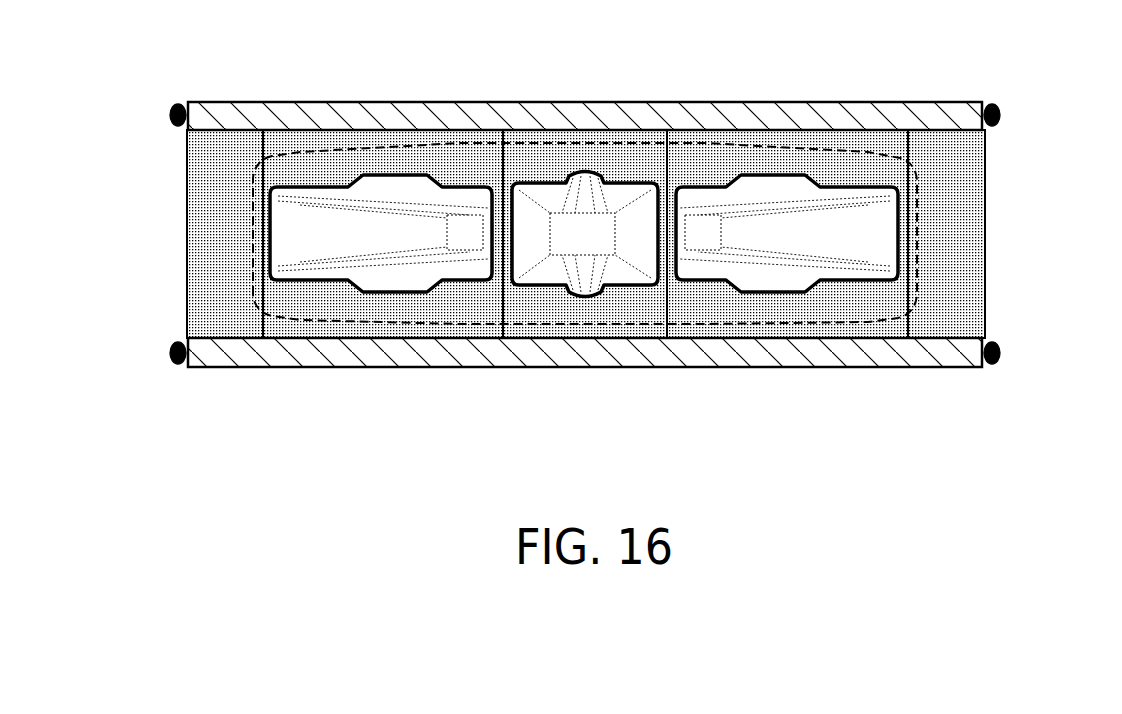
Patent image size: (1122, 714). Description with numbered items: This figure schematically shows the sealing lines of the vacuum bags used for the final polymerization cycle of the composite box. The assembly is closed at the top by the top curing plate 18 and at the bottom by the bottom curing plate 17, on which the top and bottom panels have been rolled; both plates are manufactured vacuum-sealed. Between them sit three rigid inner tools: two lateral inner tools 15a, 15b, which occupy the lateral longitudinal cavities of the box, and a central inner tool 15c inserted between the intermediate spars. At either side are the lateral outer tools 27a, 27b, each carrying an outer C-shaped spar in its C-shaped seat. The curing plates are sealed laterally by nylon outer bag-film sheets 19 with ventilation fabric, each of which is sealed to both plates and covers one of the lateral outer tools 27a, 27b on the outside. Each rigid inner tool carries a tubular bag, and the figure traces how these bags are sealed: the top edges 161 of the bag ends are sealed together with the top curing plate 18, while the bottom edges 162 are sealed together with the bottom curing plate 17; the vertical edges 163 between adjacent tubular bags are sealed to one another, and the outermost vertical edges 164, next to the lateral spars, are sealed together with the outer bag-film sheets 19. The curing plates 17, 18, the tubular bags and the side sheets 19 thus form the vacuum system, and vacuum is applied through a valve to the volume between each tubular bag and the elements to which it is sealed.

The lateral inner tool 15a is at (382, 294).
The lateral inner tool 15b is at (784, 292).
The central inner tool 15c is at (622, 292).
The bottom curing plate 17 is at (413, 367).
The top curing plate 18 is at (718, 120).
The outer bag-film sheet 19 is at (186, 178).
The lateral outer tool 27a is at (182, 279).
The lateral outer tool 27b is at (985, 303).
The top edges of the tubular bags 161 is at (337, 128).
The bottom edges of the tubular bags 162 is at (302, 367).
The vertical edges between adjacent tubular bags 163 is at (500, 312).
The vertical edges of the tubular bags adjacent to the lateral spars 164 is at (253, 257).